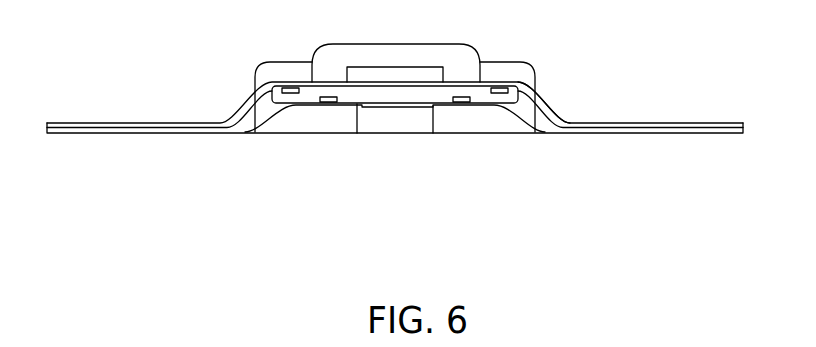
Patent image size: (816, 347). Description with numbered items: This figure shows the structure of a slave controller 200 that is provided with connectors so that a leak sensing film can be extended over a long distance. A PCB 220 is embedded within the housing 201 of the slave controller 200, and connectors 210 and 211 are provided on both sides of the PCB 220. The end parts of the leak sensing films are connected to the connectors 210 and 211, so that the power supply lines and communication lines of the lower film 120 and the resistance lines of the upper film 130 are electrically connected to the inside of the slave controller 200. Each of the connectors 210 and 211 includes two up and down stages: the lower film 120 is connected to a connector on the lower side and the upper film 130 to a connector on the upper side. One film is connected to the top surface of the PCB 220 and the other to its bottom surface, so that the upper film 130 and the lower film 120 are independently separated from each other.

The lower film 120 is at (170, 132).
The upper film 130 is at (120, 122).
The slave controller 200 is at (432, 153).
The housing 201 is at (477, 132).
The connector 210 is at (319, 120).
The connector 211 is at (497, 122).
The PCB 220 is at (354, 93).